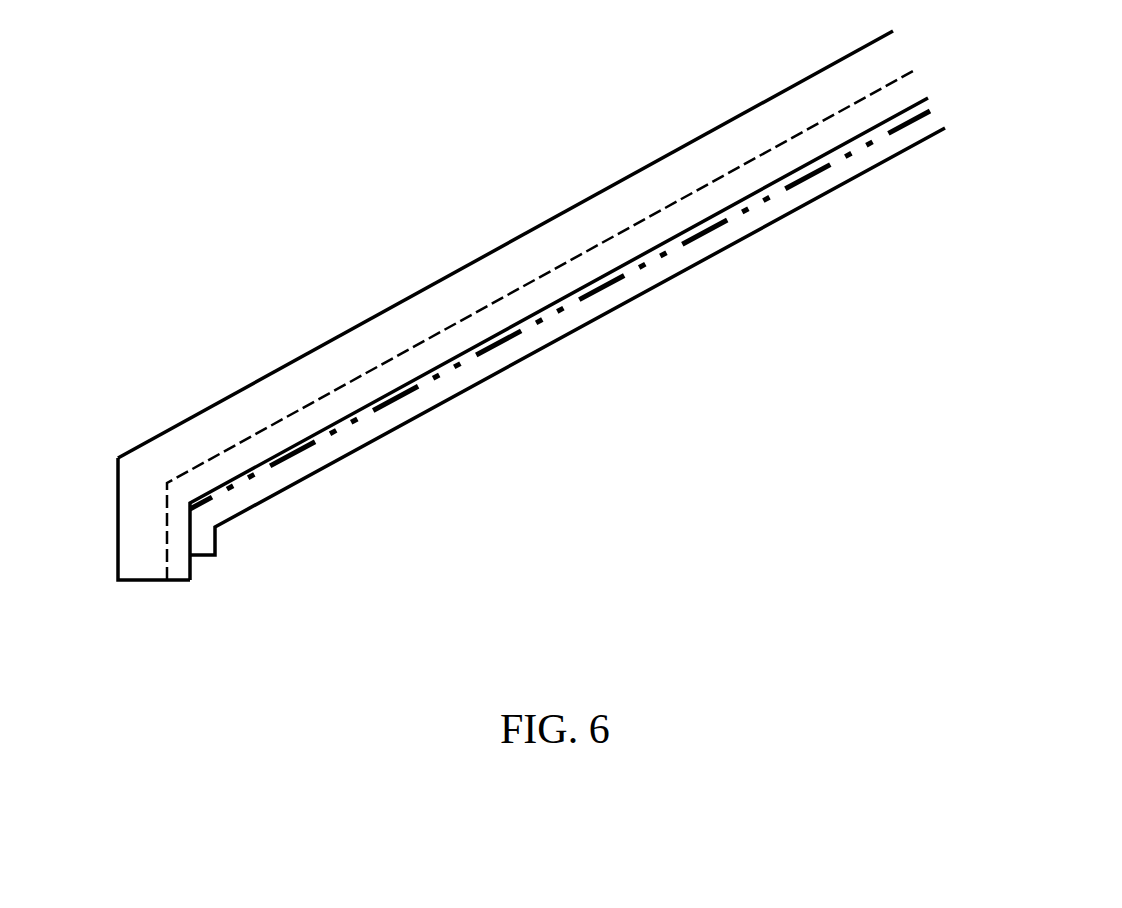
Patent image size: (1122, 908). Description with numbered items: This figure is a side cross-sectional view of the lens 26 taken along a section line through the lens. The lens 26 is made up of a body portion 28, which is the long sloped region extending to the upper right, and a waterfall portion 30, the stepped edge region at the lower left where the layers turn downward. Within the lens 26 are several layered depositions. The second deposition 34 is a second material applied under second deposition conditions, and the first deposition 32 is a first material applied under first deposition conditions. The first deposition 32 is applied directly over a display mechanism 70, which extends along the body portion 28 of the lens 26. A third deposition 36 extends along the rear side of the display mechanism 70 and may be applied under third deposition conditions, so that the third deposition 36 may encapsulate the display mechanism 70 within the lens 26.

The lens 26 is at (487, 305).
The body portion 28 is at (461, 305).
The waterfall portion 30 is at (97, 470).
The first deposition 32 is at (678, 215).
The second deposition 34 is at (527, 246).
The third deposition 36 is at (655, 275).
The display mechanism 70 is at (790, 176).